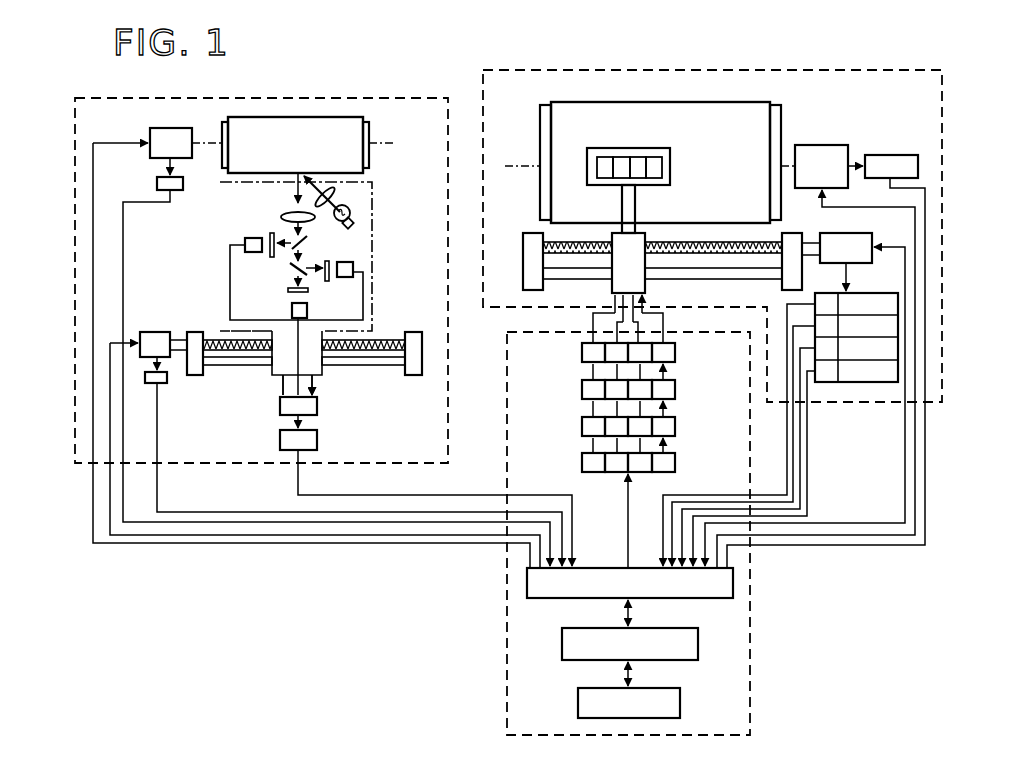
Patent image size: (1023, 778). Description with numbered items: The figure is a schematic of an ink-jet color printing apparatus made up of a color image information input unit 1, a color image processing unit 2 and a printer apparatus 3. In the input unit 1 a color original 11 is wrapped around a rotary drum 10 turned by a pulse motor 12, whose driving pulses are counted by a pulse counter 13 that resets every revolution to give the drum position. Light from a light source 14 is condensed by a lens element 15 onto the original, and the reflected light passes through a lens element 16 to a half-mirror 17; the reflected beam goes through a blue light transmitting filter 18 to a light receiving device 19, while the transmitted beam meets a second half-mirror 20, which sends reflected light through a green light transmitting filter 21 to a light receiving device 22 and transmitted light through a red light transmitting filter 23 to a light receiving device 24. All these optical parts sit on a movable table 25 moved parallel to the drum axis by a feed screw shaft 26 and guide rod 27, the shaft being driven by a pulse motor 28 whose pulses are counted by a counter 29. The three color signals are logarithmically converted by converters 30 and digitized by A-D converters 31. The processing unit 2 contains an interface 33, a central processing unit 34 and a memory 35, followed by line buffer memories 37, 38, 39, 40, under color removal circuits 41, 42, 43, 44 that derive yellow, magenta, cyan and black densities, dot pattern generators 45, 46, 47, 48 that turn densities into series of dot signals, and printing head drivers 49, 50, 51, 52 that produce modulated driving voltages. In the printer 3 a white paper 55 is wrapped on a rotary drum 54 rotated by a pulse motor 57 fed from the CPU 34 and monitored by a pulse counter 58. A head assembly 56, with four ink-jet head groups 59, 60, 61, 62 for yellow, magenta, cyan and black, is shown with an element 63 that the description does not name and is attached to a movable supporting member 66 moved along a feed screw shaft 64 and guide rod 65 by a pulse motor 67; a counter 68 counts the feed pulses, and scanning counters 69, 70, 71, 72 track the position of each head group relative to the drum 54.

The color image information input unit 1 is at (393, 96).
The color image processing unit 2 is at (505, 605).
The printer apparatus 3 is at (716, 68).
The rotary drum 10 is at (371, 132).
The color original 11 is at (281, 123).
The pulse motor 12 is at (166, 133).
The pulse counter 13 is at (157, 183).
The light source 14 is at (351, 207).
The lens element 15 is at (325, 191).
The lens element 16 is at (290, 211).
The half-mirror 17 is at (310, 242).
The blue light transmitting filter 18 is at (271, 233).
The light receiving device 19 is at (259, 253).
The half-mirror 20 is at (292, 271).
The green light transmitting filter 21 is at (327, 281).
The light receiving device 22 is at (354, 264).
The red light transmitting filter 23 is at (308, 293).
The light receiving device 24 is at (292, 310).
The movable table 25 is at (220, 267).
The feed screw shaft 26 is at (380, 339).
The guide rod 27 is at (384, 366).
The pulse motor 28 is at (157, 332).
The counter 29 is at (167, 378).
The converters 30 is at (280, 410).
The A-D converters 31 is at (318, 442).
The interface 33 is at (700, 592).
The central processing unit 34 is at (565, 648).
The memory 35 is at (585, 703).
The line buffer memory 37 is at (585, 461).
The line buffer memory 38 is at (612, 473).
The line buffer memory 39 is at (643, 473).
The line buffer memory 40 is at (672, 468).
The under color removal circuit 41 is at (582, 423).
The under color removal circuit 42 is at (607, 427).
The under color removal circuit 43 is at (645, 428).
The under color removal circuit 44 is at (677, 422).
The dot pattern generator 45 is at (582, 387).
The dot pattern generator 46 is at (607, 390).
The dot pattern generator 47 is at (645, 391).
The dot pattern generator 48 is at (677, 386).
The printing head driver 49 is at (582, 350).
The printing head driver 50 is at (607, 352).
The printing head driver 51 is at (645, 355).
The printing head driver 52 is at (677, 352).
The rotary drum 54 is at (548, 126).
The white paper 55 is at (599, 103).
The head assembly 56 is at (674, 172).
The pulse motor 57 is at (828, 147).
The pulse counter 58 is at (893, 155).
The ink-jet head group 59 is at (602, 155).
The ink-jet head group 60 is at (619, 155).
The ink-jet head group 61 is at (637, 155).
The ink-jet head group 62 is at (657, 155).
The head support 63 is at (587, 176).
The feed screw shaft 64 is at (585, 242).
The guide rod 65 is at (560, 274).
The movable supporting member 66 is at (640, 287).
The pulse motor 67 is at (840, 233).
The counter 68 is at (869, 385).
The scanning counter 69 is at (885, 293).
The scanning counter 70 is at (898, 321).
The scanning counter 71 is at (898, 345).
The scanning counter 72 is at (898, 368).